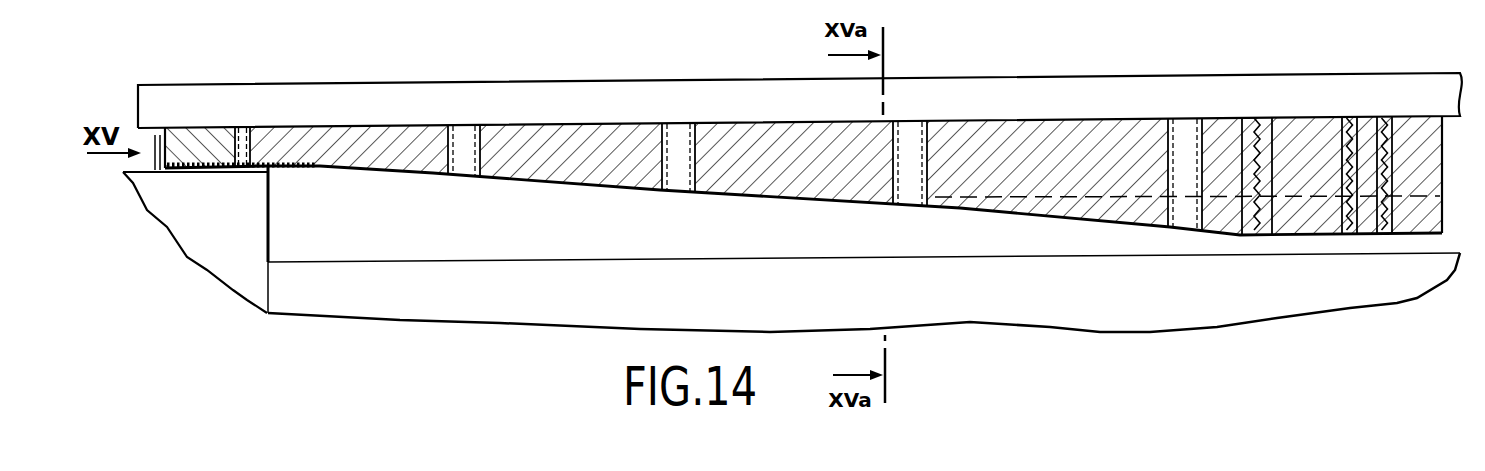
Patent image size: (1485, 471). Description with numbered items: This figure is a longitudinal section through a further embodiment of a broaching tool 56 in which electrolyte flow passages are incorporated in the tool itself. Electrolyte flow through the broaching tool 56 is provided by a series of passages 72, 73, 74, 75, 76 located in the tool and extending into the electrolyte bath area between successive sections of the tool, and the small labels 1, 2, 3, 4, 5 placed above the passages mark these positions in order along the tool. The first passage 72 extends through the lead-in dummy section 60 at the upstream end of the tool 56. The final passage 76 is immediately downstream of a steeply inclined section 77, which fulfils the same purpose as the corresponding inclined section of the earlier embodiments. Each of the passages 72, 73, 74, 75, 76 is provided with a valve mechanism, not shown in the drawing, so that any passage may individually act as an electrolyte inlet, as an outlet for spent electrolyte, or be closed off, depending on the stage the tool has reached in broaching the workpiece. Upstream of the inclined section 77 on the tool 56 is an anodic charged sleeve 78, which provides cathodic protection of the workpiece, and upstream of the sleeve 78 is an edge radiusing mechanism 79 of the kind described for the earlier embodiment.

The first stage 1 is at (241, 113).
The second stage 2 is at (464, 116).
The third stage 3 is at (678, 122).
The fourth stage 4 is at (910, 128).
The fifth stage 5 is at (1185, 138).
The broaching tool 56 is at (791, 249).
The lead-in dummy section 60 is at (241, 183).
The passage 72 is at (278, 105).
The passage 73 is at (492, 110).
The passage 74 is at (706, 115).
The passage 75 is at (938, 124).
The final passage 76 is at (1214, 134).
The steeply inclined section 77 is at (803, 237).
The anodic charged sleeve 78 is at (1276, 246).
The edge radiusing mechanism 79 is at (1377, 233).